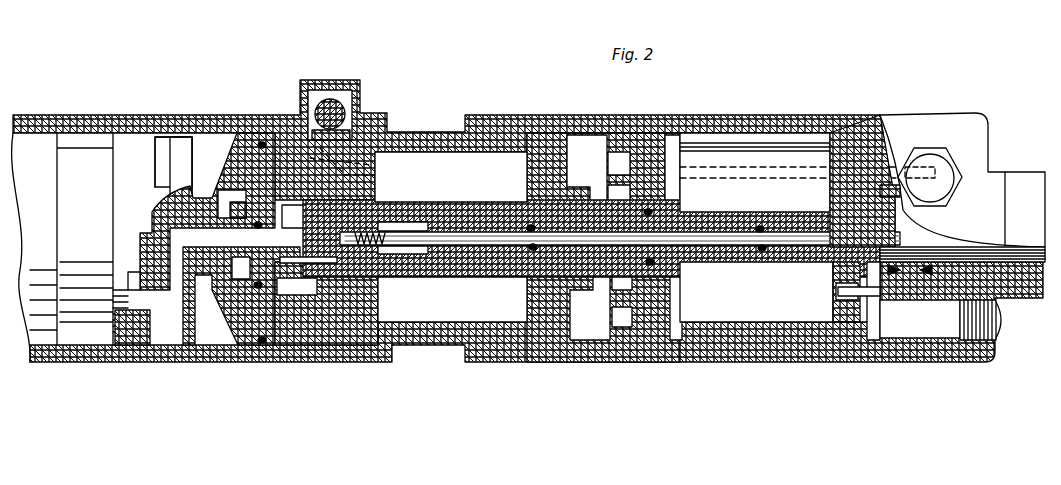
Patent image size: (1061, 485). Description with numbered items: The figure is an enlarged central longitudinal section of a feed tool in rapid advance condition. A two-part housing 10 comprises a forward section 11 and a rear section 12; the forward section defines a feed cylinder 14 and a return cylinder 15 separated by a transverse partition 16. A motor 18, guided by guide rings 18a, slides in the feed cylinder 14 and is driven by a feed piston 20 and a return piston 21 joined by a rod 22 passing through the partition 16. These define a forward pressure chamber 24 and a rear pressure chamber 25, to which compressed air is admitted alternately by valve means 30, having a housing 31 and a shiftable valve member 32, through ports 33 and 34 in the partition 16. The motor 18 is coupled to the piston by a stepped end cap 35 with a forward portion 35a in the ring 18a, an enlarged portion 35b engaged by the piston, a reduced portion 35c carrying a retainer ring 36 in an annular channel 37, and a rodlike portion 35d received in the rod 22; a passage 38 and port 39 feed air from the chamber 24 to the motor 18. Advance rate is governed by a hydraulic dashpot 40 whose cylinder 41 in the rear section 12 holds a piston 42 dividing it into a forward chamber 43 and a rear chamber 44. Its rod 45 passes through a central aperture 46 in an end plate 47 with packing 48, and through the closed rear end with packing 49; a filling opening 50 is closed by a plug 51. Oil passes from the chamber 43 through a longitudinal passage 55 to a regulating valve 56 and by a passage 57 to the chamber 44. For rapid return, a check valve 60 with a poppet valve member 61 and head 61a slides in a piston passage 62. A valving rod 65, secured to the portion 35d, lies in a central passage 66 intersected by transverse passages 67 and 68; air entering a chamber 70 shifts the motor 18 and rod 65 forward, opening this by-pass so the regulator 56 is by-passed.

The two-part housing 10 is at (496, 99).
The forward housing section 11 is at (113, 125).
The rear housing section 12 is at (720, 118).
The feed cylinder 14 is at (203, 140).
The return cylinder 15 is at (440, 150).
The transverse partition 16 is at (378, 310).
The motor 18 is at (47, 136).
The guide rings 18a is at (138, 340).
The feed piston 20 is at (238, 140).
The return piston 21 is at (530, 178).
The piston rod 22 is at (464, 204).
The forward pressure chamber 24 is at (295, 291).
The rear pressure chamber 25 is at (436, 332).
The valve means 30 is at (376, 103).
The valve housing 31 is at (344, 102).
The valve member 32 is at (300, 122).
The port 33 is at (332, 161).
The port 34 is at (376, 165).
The end cap 35 is at (170, 133).
The forward end cap portion 35a is at (130, 281).
The enlarged end cap portion 35b is at (193, 345).
The reduced end cap portion 35c is at (209, 317).
The rodlike end cap portion 35d is at (372, 250).
The retainer ring 36 is at (226, 192).
The annular channel 37 is at (220, 275).
The passage 38 is at (207, 211).
The port 39 is at (307, 206).
The hydraulic dashpot 40 is at (783, 327).
The dashpot cylinder 41 is at (797, 322).
The dashpot piston 42 is at (828, 188).
The forward dashpot chamber 43 is at (752, 326).
The rear dashpot chamber 44 is at (888, 319).
The dashpot piston rod 45 is at (790, 222).
The central aperture 46 is at (620, 220).
The end plate 47 is at (667, 298).
The packing 48 is at (680, 282).
The packing 49 is at (912, 268).
The filling opening 50 is at (930, 338).
The closure plug 51 is at (1002, 333).
The longitudinal passage 55 is at (748, 180).
The feed control regulating valve 56 is at (957, 160).
The passage 57 is at (892, 192).
The check valve 60 is at (838, 322).
The poppet valve member 61 is at (845, 283).
The valve head 61a is at (838, 292).
The piston passage 62 is at (834, 312).
The valving rod 65 is at (762, 247).
The central passage 66 is at (712, 235).
The transverse passage 67 is at (811, 269).
The transverse passage 68 is at (962, 247).
The chamber 70 is at (369, 257).